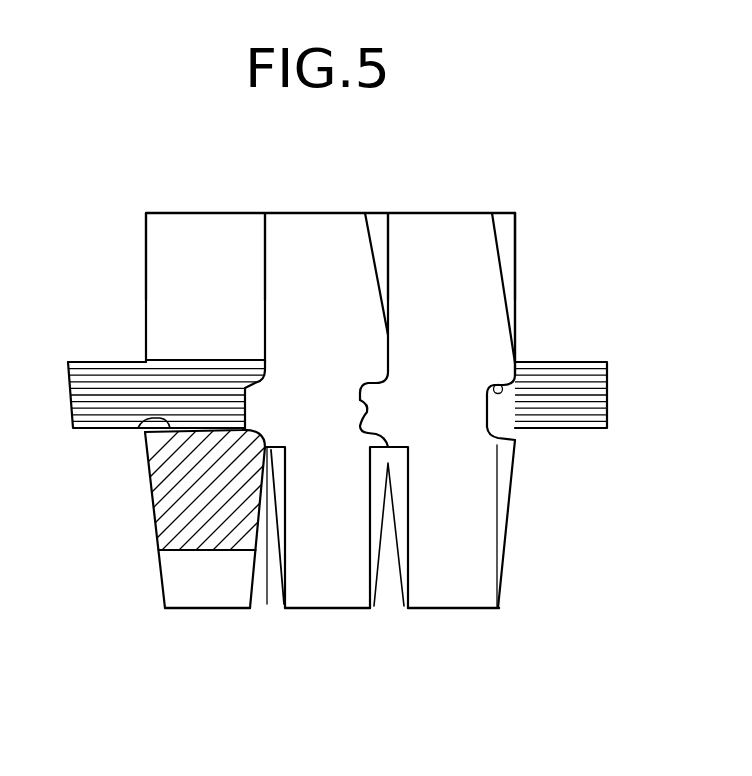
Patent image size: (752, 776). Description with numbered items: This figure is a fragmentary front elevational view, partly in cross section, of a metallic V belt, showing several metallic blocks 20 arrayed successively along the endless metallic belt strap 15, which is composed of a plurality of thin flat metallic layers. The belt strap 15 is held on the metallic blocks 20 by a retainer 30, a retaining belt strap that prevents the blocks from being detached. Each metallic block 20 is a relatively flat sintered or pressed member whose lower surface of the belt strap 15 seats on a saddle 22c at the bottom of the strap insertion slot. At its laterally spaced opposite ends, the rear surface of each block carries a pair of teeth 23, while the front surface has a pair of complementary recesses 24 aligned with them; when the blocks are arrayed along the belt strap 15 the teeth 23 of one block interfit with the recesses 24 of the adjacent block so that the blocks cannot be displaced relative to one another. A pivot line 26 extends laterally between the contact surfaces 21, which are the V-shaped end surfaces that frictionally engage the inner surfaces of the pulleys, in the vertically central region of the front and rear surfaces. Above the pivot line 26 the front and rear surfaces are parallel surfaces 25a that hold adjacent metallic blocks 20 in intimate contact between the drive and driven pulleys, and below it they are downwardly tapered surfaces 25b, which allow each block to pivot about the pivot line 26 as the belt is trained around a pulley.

The metallic block 20 is at (214, 212).
The parallel surfaces 25a is at (146, 305).
The saddle 22c is at (152, 422).
The teeth 23 is at (255, 387).
The recesses 24 is at (362, 410).
The belt strap 15 is at (580, 429).
The retainer 30 is at (562, 368).
The pivot line 26 is at (148, 470).
The tapered surfaces 25b is at (157, 541).
The contact surfaces 21 is at (336, 593).